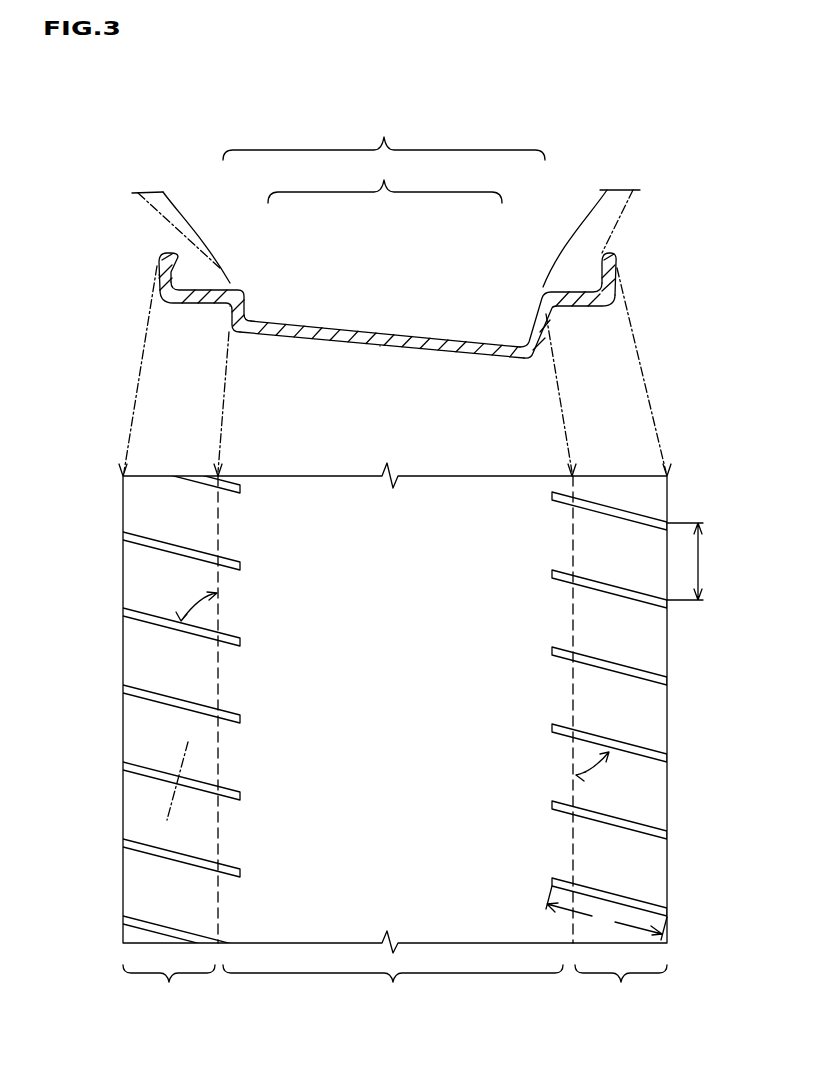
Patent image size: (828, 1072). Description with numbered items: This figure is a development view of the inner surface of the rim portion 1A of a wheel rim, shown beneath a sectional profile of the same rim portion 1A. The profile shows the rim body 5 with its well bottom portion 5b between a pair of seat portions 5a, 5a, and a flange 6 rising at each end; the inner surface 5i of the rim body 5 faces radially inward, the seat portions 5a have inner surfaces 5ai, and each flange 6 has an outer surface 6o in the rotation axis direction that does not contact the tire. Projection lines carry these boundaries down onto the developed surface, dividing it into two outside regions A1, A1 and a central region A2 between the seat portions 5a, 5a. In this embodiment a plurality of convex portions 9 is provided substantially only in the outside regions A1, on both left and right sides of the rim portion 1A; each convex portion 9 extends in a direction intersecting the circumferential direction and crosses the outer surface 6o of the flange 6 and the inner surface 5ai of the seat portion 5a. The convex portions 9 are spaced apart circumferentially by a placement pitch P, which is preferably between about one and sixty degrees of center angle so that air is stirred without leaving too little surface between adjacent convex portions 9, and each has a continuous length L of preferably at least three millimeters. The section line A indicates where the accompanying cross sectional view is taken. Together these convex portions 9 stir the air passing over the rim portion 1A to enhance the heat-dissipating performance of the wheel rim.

The rim portion 1A is at (461, 489).
The rim body 5 is at (348, 296).
The seat portion 5a is at (348, 281).
The inner surface of the seat portion 5ai is at (222, 296).
The well bottom portion 5b is at (382, 315).
The inner surface of the rim body 5i is at (349, 359).
The flange 6 is at (385, 224).
The outer surface of the flange 6o is at (168, 273).
The convex portion 9 is at (185, 302).
The placement pitch P is at (685, 561).
The continuous length of the convex portion L is at (606, 913).
The line A- A is at (177, 781).
The outside region A1 is at (395, 990).
The central region A2 is at (393, 990).